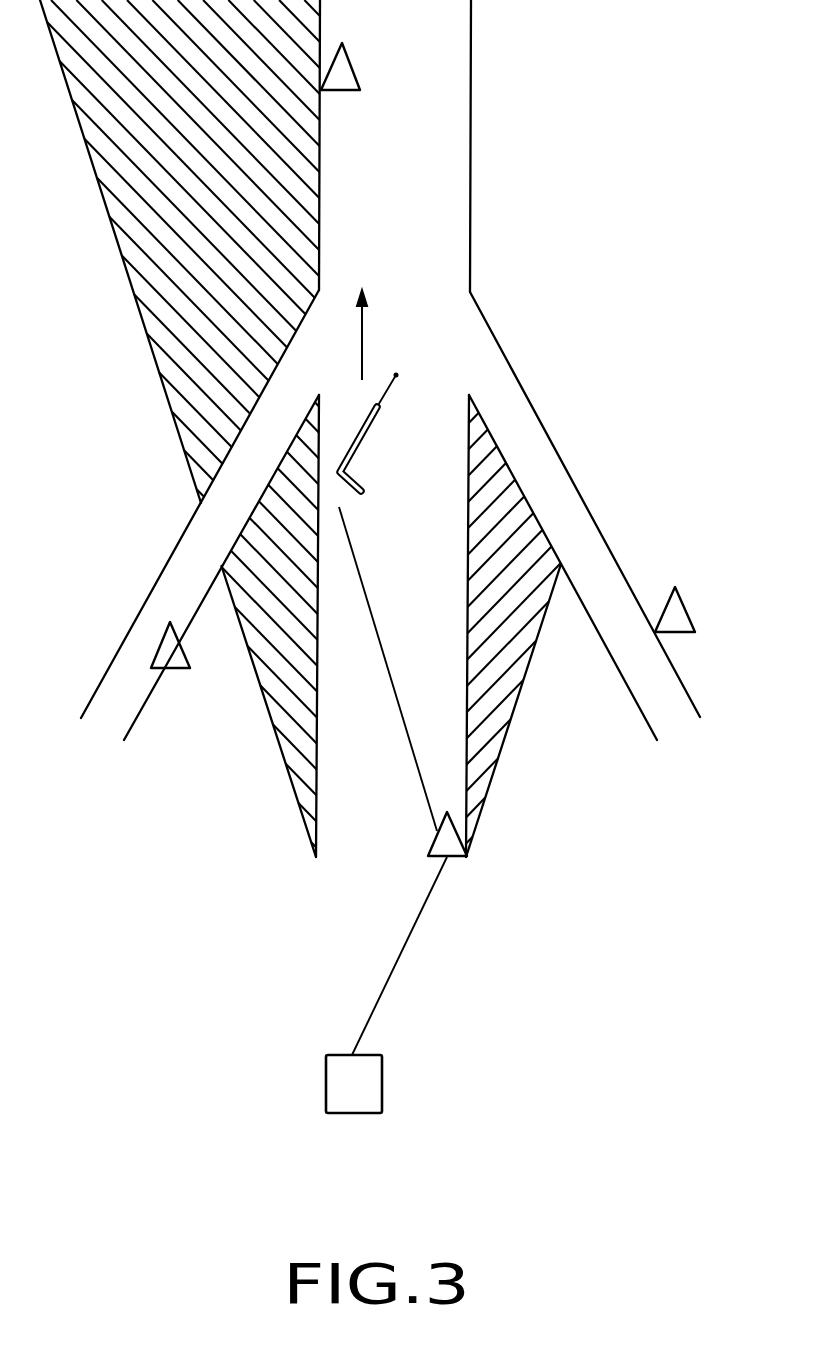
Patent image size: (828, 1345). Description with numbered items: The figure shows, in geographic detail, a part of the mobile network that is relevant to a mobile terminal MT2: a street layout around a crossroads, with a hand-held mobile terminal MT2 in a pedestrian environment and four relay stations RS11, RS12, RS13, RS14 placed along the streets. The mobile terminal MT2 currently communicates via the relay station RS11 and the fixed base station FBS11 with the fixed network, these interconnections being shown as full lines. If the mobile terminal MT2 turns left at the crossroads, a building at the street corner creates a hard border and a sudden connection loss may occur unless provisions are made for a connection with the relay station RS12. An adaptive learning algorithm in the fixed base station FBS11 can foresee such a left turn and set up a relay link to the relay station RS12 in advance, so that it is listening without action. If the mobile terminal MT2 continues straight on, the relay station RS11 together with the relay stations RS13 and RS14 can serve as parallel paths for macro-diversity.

The relay station RS14 is at (368, 87).
The relay station RS12 is at (194, 666).
The relay station RS13 is at (703, 628).
The relay station RS11 is at (471, 858).
The mobile terminal MT2 is at (386, 432).
The fixed base station FBS11 is at (349, 1114).